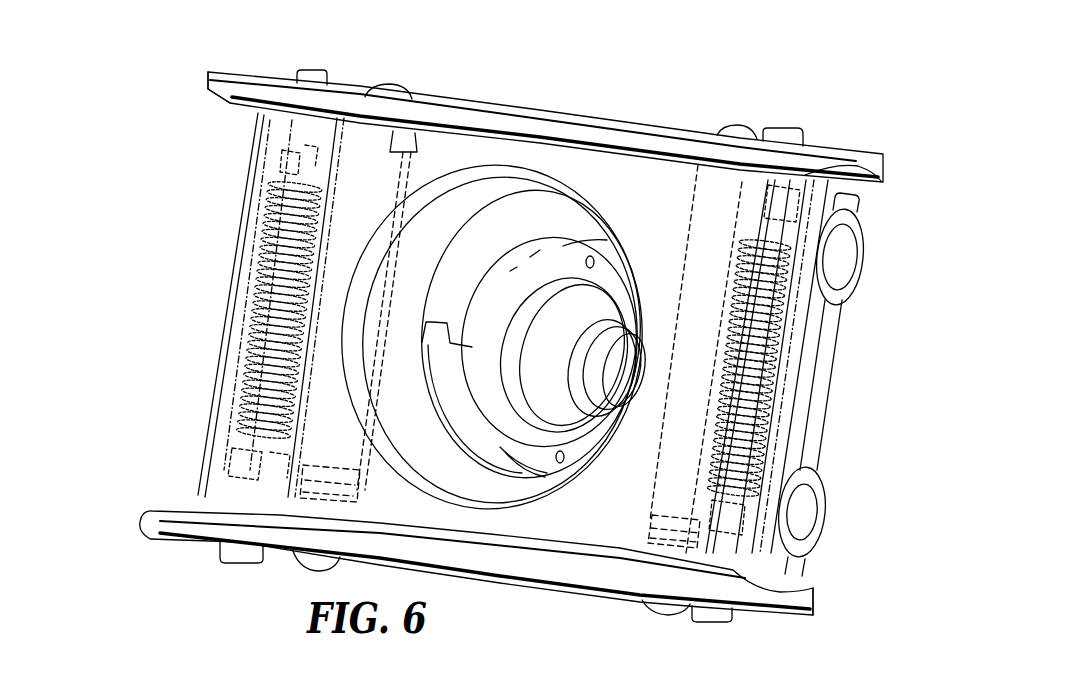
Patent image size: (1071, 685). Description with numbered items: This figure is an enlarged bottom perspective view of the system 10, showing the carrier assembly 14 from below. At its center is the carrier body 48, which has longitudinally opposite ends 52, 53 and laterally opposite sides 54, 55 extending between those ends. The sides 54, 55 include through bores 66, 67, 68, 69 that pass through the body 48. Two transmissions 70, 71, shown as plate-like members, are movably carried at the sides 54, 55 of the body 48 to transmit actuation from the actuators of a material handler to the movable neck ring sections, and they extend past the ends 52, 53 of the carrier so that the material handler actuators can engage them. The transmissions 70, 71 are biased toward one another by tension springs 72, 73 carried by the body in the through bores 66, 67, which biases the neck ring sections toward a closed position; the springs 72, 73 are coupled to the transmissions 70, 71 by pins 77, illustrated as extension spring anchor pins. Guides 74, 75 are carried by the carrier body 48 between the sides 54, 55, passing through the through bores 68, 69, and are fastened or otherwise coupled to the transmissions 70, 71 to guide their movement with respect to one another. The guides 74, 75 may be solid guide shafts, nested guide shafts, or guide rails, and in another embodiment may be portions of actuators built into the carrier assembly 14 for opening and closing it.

The pivot assembly 10 is at (748, 60).
The carrier assembly 14 is at (120, 200).
The body 48 is at (660, 182).
The end 52 is at (200, 361).
The end 53 is at (846, 437).
The side 54 is at (606, 150).
The side 55 is at (503, 549).
The through bore 66 is at (274, 136).
The through bore 67 is at (745, 189).
The through bore 68 is at (292, 518).
The through bore 69 is at (693, 552).
The transmission 70 is at (191, 96).
The transmission 71 is at (822, 624).
The tension spring 72 is at (265, 270).
The tension spring 73 is at (780, 374).
The guide 74 is at (349, 493).
The guide 75 is at (646, 524).
The pins 77 is at (333, 58).